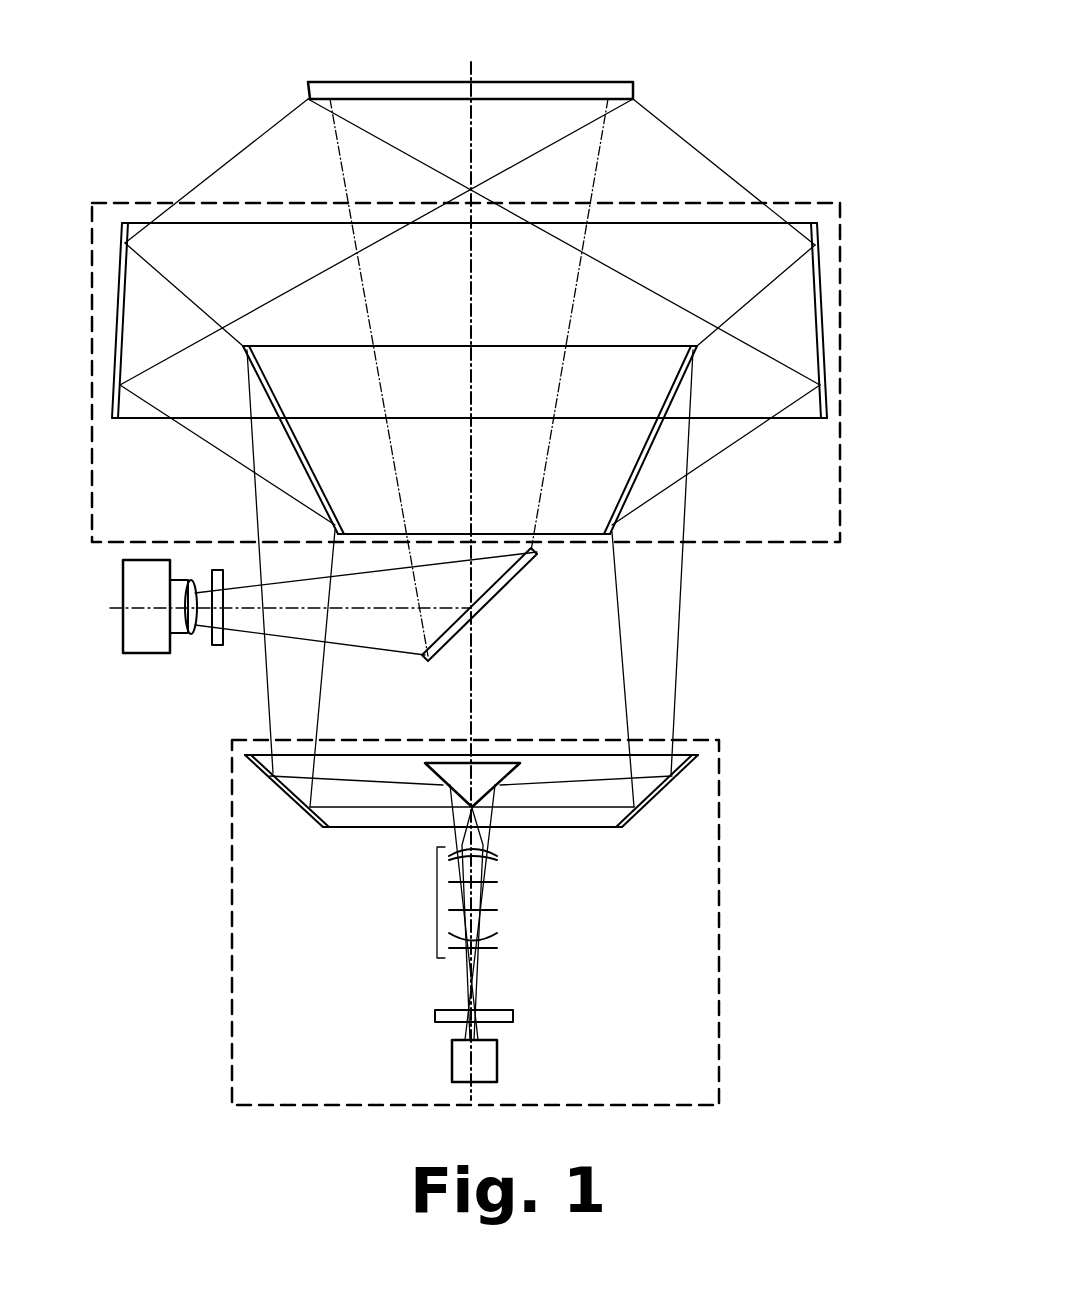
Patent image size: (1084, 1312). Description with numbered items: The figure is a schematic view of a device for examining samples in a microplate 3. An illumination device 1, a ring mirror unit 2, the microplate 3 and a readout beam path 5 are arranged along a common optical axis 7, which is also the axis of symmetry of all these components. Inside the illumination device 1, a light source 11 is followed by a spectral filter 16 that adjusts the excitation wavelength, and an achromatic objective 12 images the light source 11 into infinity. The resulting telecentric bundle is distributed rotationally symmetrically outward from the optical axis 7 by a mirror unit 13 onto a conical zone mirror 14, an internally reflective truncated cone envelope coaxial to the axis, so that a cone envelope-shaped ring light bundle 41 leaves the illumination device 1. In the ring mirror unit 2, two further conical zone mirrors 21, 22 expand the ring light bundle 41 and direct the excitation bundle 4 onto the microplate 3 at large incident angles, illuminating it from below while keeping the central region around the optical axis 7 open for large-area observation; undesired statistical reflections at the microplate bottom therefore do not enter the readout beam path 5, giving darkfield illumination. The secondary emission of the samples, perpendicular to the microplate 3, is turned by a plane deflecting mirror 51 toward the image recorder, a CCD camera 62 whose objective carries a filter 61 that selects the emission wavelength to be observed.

The illumination device 1 is at (720, 1058).
The light source 11 is at (455, 1060).
The achromatic objective 12 is at (435, 902).
The mirror unit 13 is at (443, 772).
The conical zone mirror 14 is at (660, 798).
The spectral filter 16 is at (505, 1013).
The ring mirror unit 2 is at (843, 293).
The conical zone mirror 21 is at (653, 443).
The conical zone mirror 22 is at (825, 335).
The microplate 3 is at (623, 91).
The excitation bundle 4 is at (723, 180).
The ring light bundle 41 is at (677, 693).
The readout beam path 5 is at (345, 185).
The deflecting mirror 51 is at (515, 577).
The filter 61 is at (215, 643).
The CCD camera 62 is at (142, 642).
The optical axis 7 is at (468, 72).